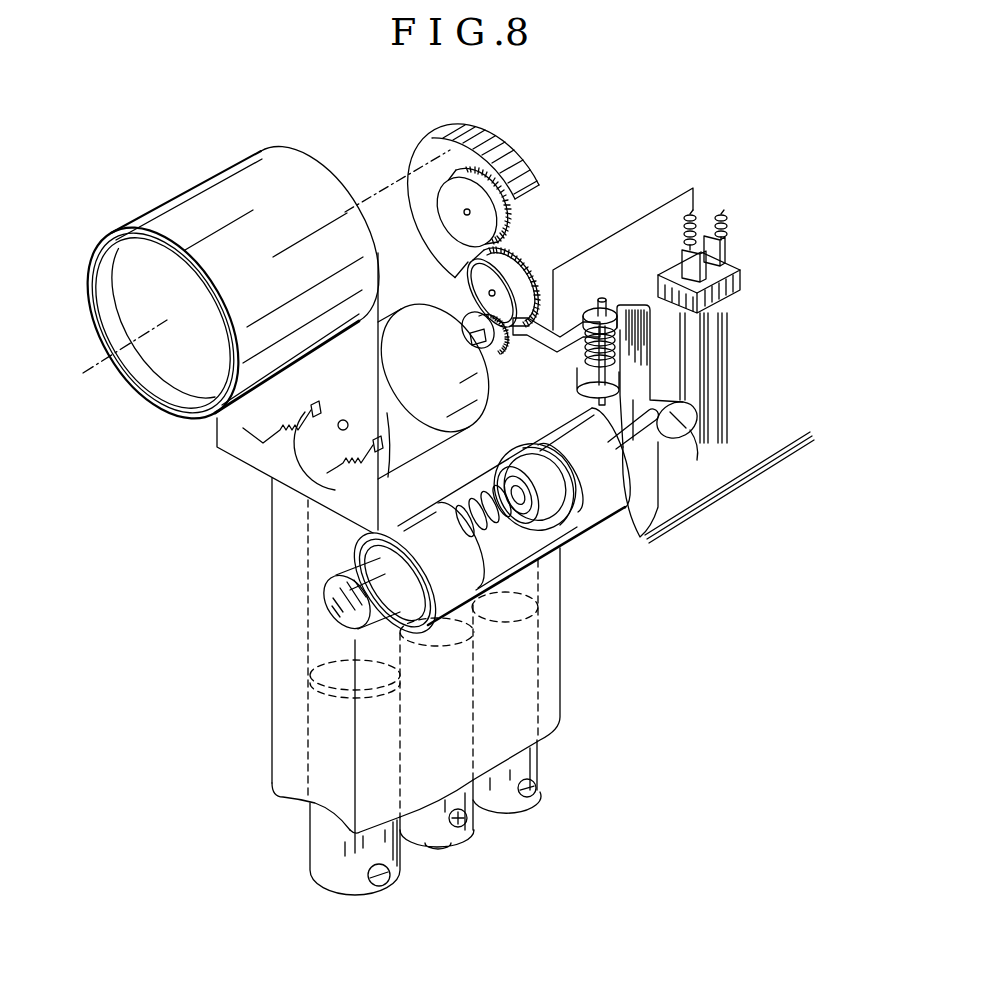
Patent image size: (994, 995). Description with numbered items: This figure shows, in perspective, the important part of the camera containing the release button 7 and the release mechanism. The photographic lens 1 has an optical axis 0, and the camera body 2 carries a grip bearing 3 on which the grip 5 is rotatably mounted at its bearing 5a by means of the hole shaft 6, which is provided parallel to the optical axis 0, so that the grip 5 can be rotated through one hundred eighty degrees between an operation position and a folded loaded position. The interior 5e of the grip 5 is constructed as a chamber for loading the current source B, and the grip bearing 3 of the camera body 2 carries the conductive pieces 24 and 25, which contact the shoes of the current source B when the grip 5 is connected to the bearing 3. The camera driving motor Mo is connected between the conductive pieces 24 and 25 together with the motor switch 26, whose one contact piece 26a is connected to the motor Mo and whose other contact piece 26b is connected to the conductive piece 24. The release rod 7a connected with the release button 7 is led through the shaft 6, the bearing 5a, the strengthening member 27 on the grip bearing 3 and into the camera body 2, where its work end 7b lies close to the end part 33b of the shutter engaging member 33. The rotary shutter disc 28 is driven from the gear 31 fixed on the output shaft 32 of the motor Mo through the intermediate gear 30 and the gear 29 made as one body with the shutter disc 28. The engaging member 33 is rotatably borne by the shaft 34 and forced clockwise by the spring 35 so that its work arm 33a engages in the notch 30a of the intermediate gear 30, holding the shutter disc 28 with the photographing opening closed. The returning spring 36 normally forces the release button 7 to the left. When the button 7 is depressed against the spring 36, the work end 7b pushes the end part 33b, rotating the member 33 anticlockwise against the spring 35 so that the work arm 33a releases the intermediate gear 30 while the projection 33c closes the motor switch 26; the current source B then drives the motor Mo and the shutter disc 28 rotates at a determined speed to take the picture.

The photographic lens 1 is at (298, 226).
The optical axis 0 is at (97, 370).
The camera body 2 is at (791, 370).
The grip bearing 3 is at (533, 550).
The grip 5 is at (278, 653).
The bearing of the grip 5a is at (591, 461).
The interior of the grip 5e is at (283, 809).
The hole shaft 6 is at (360, 553).
The release button 7 is at (333, 600).
The release rod 7a is at (634, 448).
The work end 7b is at (657, 410).
The conductive piece 24 is at (527, 382).
The conductive piece 25 is at (338, 465).
The motor switch 26 is at (745, 300).
The contact piece 26a is at (728, 321).
The contact piece 26b is at (696, 381).
The strengthening member 27 is at (550, 512).
The rotary shutter disc 28 is at (520, 170).
The gear 29 is at (448, 212).
The intermediate gear 30 is at (510, 265).
The notch 30a is at (515, 280).
The gear 31 is at (470, 317).
The output shaft 32 is at (469, 338).
The shutter engaging member 33 is at (640, 305).
The work arm 33a is at (530, 340).
The end part 33b is at (670, 440).
The projection 33c is at (695, 432).
The shaft 34 is at (602, 298).
The spring 35 is at (592, 318).
The returning spring 36 is at (473, 507).
The current source B is at (530, 762).
The camera driving motor Mo is at (431, 406).